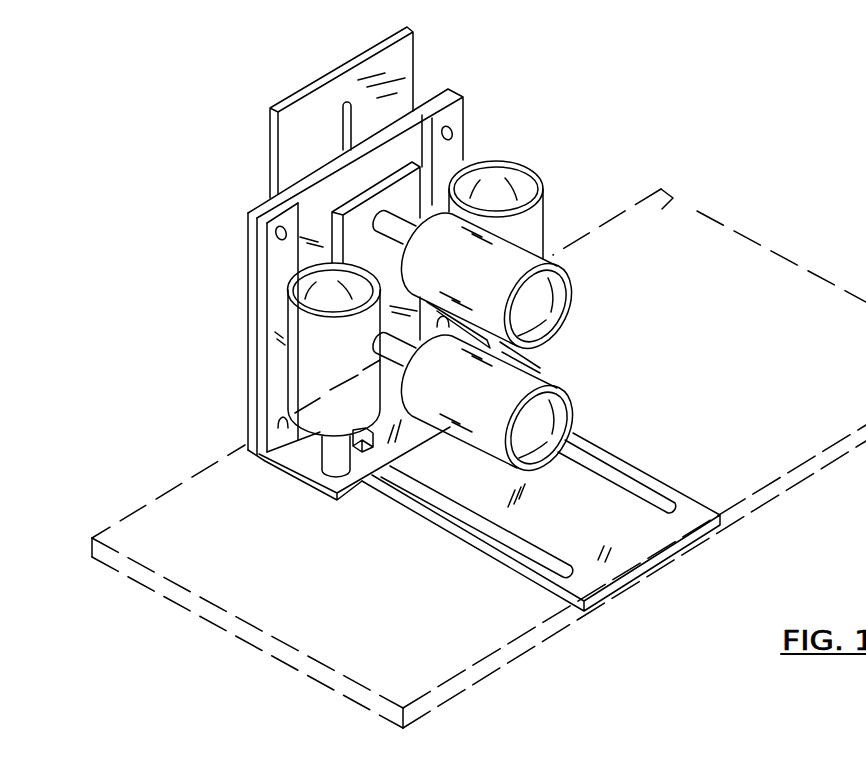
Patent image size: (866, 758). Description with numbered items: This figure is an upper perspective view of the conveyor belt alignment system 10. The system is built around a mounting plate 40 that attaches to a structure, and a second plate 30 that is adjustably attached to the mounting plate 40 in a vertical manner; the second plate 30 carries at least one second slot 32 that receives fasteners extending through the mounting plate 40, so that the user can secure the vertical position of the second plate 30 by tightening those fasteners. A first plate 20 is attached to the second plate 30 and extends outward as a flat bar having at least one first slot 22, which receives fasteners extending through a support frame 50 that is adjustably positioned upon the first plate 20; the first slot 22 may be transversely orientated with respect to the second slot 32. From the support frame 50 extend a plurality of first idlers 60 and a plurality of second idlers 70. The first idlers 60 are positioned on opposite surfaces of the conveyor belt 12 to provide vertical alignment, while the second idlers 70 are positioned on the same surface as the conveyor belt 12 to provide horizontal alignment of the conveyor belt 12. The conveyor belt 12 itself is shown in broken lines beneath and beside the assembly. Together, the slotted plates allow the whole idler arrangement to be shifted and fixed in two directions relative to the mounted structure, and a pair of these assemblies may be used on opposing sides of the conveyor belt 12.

The conveyor belt alignment system 10 is at (177, 93).
The conveyor belt 12 is at (663, 190).
The first plate 20 is at (585, 563).
The first slot 22 is at (674, 511).
The second plate 30 is at (287, 113).
The second slot 32 is at (345, 128).
The mounting plate 40 is at (247, 280).
The support frame 50 is at (418, 187).
The first idlers 60 is at (576, 403).
The second idlers 70 is at (302, 389).